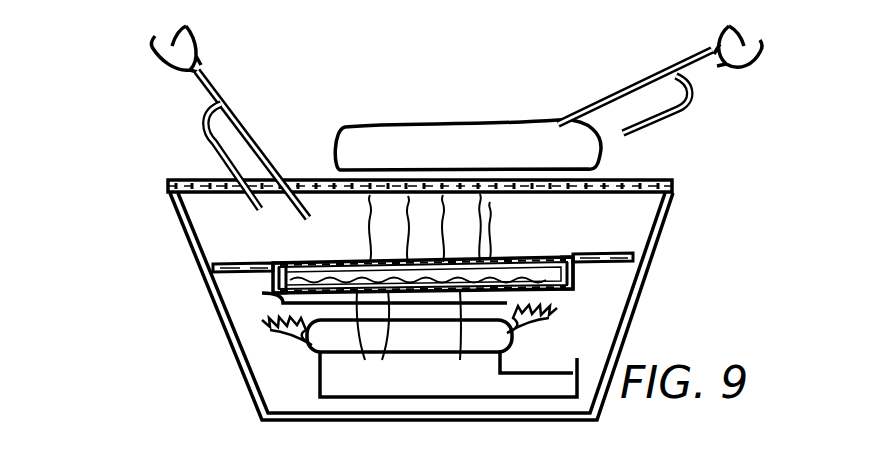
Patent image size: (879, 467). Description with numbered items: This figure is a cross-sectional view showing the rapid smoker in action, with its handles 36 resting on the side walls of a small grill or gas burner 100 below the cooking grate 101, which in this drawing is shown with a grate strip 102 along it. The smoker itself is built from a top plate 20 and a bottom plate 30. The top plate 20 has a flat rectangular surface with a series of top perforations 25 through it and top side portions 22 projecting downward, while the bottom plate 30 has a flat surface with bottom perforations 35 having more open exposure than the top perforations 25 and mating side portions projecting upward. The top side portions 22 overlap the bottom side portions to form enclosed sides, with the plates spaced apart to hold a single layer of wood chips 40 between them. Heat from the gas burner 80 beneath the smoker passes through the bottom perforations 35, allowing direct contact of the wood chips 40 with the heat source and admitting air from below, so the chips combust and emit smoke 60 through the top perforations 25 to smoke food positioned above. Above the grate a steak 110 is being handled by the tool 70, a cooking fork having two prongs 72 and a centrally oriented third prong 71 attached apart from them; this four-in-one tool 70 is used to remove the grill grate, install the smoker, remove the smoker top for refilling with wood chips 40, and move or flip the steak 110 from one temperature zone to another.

The small grill or gas burner 100 is at (193, 267).
The cooking grate 101 is at (175, 186).
The lid seal strip 102 is at (225, 180).
The steak 110 is at (473, 117).
The tool 70 is at (202, 68).
The third prong 71 is at (221, 137).
The two prongs 72 is at (251, 124).
The handles 36 is at (237, 261).
The top plate 20 is at (312, 257).
The top side portions 22 is at (277, 277).
The top perforations 25 is at (367, 257).
The smoke 60 is at (490, 255).
The bottom plate 30 is at (280, 303).
The bottom perforations 35 is at (409, 342).
The wood chips 40 is at (457, 342).
The gas burner 80 is at (312, 343).